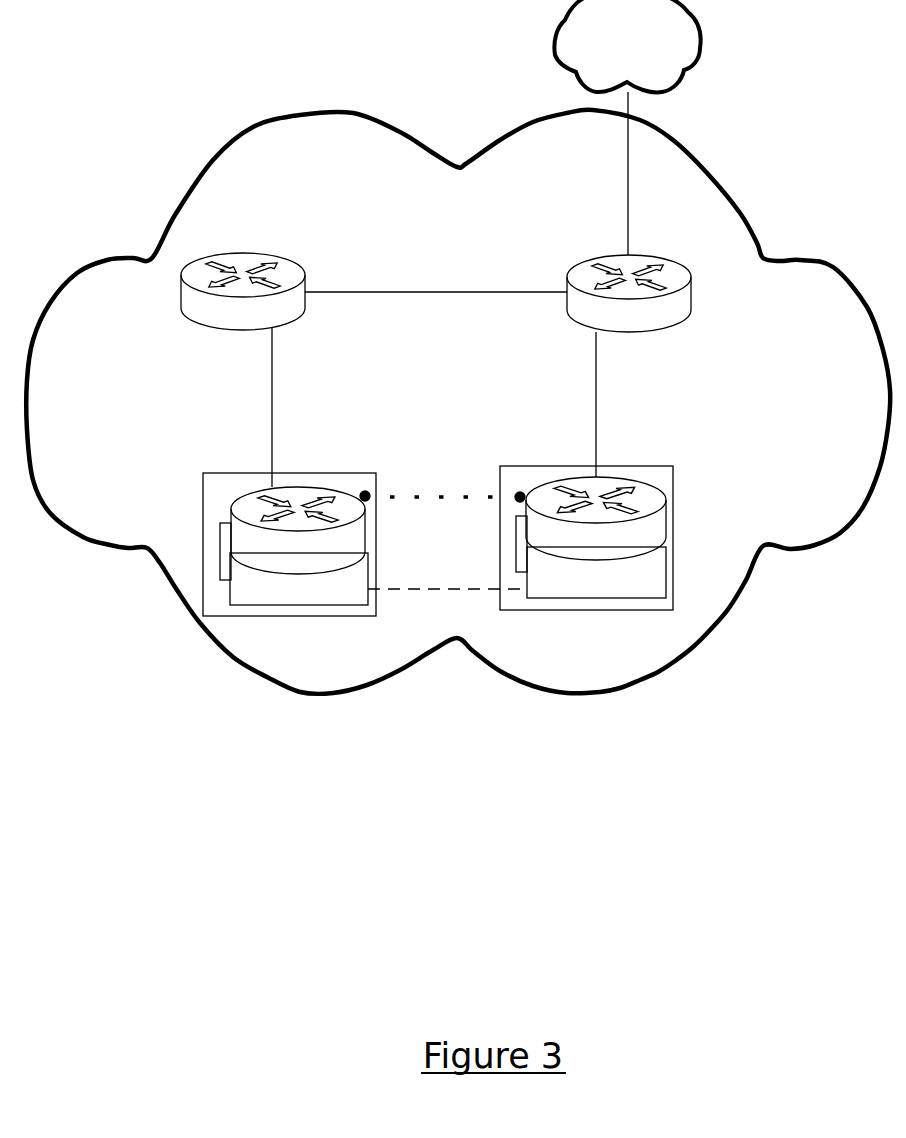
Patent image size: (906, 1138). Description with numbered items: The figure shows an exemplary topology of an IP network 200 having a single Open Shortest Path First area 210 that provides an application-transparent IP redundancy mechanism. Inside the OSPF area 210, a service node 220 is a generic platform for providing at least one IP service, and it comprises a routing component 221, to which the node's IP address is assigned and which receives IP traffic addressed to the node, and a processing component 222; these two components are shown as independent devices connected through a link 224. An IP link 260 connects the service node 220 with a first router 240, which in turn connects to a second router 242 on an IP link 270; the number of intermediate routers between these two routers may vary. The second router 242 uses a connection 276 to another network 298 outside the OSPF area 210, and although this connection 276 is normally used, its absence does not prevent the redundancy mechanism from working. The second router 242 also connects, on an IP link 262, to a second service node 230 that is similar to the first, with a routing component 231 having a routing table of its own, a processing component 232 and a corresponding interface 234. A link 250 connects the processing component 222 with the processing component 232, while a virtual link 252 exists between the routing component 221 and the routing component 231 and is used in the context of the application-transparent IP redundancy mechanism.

The IP network 200 is at (145, 152).
The OSPF area 210 is at (396, 118).
The other network 298 is at (554, 65).
The connection 276 is at (628, 184).
The IP link 270 is at (412, 292).
The router R1 240 is at (242, 254).
The router R2 242 is at (645, 257).
The IP link 260 is at (272, 400).
The IP link 262 is at (596, 375).
The service node 220 is at (212, 472).
The routing component 221 is at (312, 482).
The processing component 222 is at (300, 617).
The link 224 is at (212, 545).
The service node 230 is at (505, 465).
The routing component 231 is at (610, 473).
The processing component 232 is at (600, 611).
The interface of device B 234 is at (507, 535).
The virtual link 252 is at (413, 495).
The link 250 is at (397, 588).